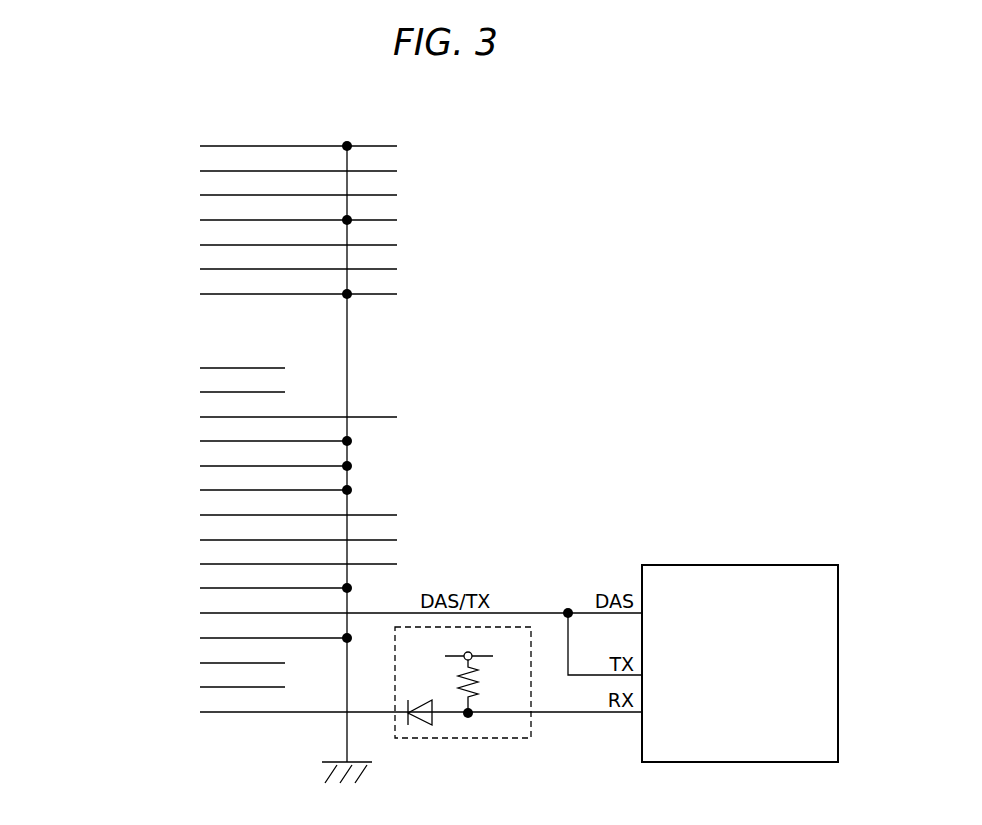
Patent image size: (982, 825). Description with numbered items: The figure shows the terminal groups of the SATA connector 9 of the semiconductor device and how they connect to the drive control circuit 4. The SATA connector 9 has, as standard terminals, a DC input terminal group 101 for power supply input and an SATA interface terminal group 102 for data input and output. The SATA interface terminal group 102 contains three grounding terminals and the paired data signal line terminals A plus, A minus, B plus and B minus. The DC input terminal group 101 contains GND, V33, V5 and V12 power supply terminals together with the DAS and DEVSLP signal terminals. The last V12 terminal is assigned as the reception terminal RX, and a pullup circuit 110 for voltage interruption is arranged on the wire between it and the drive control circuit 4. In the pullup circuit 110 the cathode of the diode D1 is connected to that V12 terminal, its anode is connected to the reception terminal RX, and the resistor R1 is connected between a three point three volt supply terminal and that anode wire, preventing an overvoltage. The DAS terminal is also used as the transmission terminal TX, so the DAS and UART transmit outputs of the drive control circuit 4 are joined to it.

The SATA connector 9 is at (145, 118).
The SATA interface terminal group 102 is at (97, 133).
The DC input terminal group 101 is at (97, 355).
The drive control circuit 4 is at (742, 565).
The pullup circuit 110 is at (465, 740).
The resistor R1 is at (487, 680).
The diode D1 is at (432, 700).